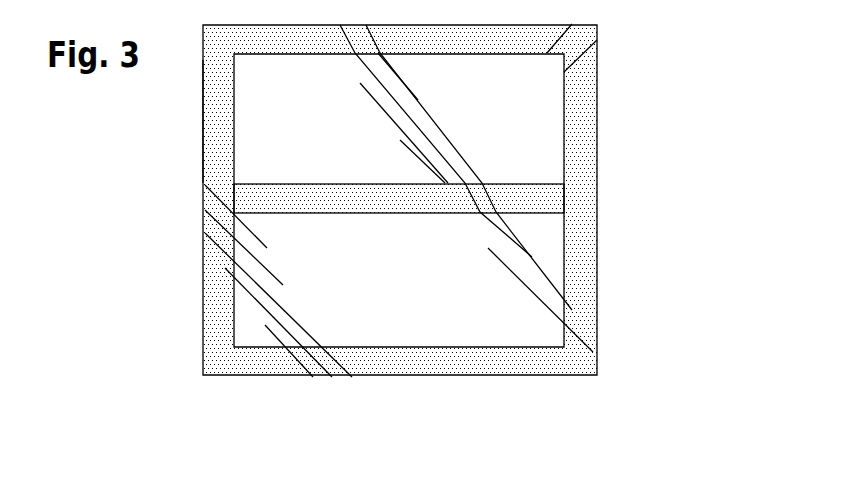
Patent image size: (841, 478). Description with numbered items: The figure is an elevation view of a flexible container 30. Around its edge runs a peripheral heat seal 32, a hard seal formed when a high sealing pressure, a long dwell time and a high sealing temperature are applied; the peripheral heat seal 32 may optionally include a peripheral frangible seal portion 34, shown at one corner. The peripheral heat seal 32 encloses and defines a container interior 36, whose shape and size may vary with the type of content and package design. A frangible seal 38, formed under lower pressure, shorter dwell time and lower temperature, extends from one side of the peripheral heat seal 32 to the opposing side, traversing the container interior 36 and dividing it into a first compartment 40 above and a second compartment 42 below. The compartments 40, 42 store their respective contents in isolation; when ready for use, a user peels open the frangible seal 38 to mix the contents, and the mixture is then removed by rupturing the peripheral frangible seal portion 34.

The flexible container 30 is at (432, 190).
The peripheral heat seal 32 is at (580, 248).
The peripheral frangible seal portion 34 is at (598, 24).
The container interior 36 is at (256, 124).
The frangible seal 38 is at (270, 183).
The first compartment 40 is at (368, 144).
The second compartment 42 is at (368, 316).